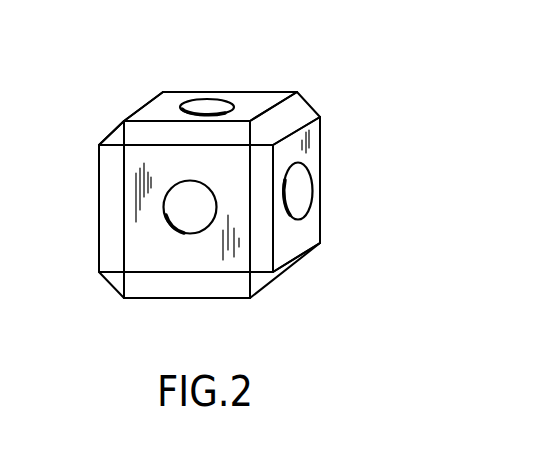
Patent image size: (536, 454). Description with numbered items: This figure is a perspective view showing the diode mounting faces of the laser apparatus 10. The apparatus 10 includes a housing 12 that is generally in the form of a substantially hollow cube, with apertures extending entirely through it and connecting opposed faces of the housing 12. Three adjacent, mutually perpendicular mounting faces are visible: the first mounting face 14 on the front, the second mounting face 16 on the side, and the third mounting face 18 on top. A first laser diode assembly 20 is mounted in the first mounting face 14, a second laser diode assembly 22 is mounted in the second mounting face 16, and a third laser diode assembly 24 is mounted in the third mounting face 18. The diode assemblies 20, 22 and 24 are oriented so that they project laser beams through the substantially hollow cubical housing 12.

The laser apparatus 10 is at (313, 80).
The housing 12 is at (88, 148).
The first mounting face 14 is at (145, 287).
The second mounting face 16 is at (287, 245).
The third mounting face 18 is at (255, 103).
The first laser diode assembly 20 is at (180, 203).
The second laser diode assembly 22 is at (298, 188).
The third laser diode assembly 24 is at (202, 107).